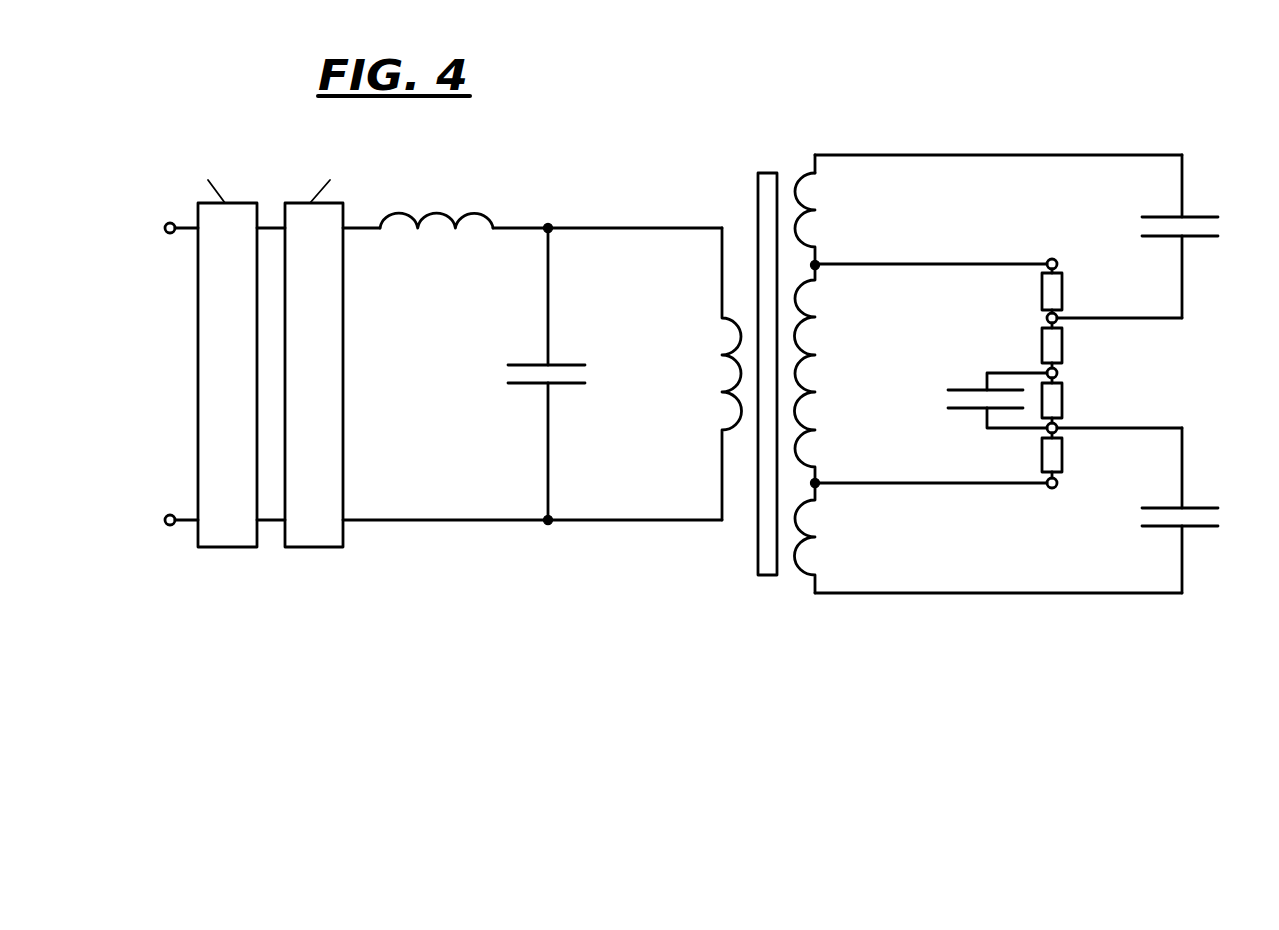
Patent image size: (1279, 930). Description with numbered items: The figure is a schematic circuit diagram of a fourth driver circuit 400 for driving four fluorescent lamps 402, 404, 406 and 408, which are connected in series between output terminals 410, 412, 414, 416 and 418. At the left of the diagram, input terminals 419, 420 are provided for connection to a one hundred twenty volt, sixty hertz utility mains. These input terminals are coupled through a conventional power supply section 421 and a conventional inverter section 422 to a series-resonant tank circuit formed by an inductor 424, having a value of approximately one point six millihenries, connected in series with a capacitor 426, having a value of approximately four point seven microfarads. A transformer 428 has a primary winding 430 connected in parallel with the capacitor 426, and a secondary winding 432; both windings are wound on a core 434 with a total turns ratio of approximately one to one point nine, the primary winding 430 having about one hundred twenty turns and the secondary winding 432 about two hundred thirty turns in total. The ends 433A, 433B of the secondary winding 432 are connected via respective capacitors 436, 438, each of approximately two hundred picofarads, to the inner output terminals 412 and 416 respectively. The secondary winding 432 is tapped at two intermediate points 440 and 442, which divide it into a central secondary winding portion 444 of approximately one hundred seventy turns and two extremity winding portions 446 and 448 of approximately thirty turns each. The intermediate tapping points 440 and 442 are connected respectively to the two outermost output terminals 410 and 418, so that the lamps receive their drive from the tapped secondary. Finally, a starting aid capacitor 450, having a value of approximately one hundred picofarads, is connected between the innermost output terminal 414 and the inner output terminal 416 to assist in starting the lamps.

The fourth driver circuit 400 is at (357, 656).
The fluorescent lamp 402 is at (1063, 300).
The fluorescent lamp 404 is at (1063, 348).
The fluorescent lamp 406 is at (1063, 395).
The fluorescent lamp 408 is at (1063, 447).
The output terminal 410 is at (1055, 260).
The inner output terminal 412 is at (1046, 316).
The innermost output terminal 414 is at (1057, 372).
The inner output terminal 416 is at (1047, 431).
The output terminal 418 is at (1057, 488).
The input terminal 419 is at (166, 232).
The input terminal 420 is at (166, 516).
The power supply section 421 is at (245, 380).
The inverter section 422 is at (333, 380).
The inductor 424 is at (418, 237).
The capacitor 426 is at (527, 388).
The transformer 428 is at (769, 610).
The primary winding 430 is at (723, 357).
The secondary winding 432 is at (805, 108).
The end of the secondary winding 433A is at (816, 155).
The end of the secondary winding 433B is at (816, 594).
The core 434 is at (767, 170).
The capacitor 436 is at (1196, 216).
The capacitor 438 is at (1198, 528).
The intermediate tapping point 440 is at (817, 268).
The intermediate tapping point 442 is at (817, 482).
The central secondary winding portion 444 is at (810, 392).
The extremity winding portion 446 is at (812, 210).
The extremity winding portion 448 is at (812, 538).
The starting aid capacitor 450 is at (962, 388).